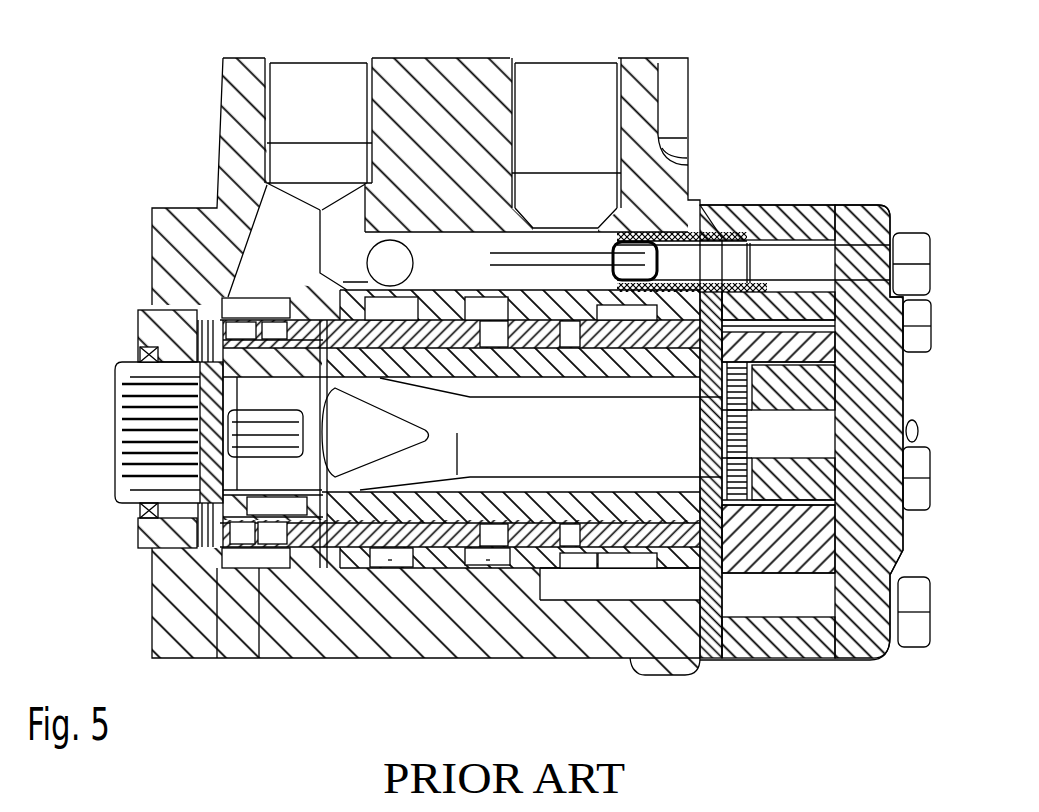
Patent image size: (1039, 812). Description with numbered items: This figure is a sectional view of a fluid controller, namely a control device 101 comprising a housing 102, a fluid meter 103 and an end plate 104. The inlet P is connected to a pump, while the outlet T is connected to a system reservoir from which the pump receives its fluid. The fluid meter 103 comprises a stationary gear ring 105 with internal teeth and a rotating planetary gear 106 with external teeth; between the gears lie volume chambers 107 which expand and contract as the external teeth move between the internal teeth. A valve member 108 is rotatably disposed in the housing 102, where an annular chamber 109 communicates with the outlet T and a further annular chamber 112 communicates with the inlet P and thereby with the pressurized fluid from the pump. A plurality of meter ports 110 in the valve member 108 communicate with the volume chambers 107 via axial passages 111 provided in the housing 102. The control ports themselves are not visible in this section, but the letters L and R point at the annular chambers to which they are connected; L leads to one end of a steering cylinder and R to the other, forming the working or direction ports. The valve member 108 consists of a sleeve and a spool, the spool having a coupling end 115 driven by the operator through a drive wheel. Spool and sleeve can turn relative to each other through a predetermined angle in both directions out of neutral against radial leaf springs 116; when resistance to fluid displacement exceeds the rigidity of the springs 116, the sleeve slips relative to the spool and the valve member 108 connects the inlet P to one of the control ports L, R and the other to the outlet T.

The control device 101 is at (702, 117).
The housing 102 is at (233, 85).
The fluid meter 103 is at (815, 400).
The end plate 104 is at (867, 217).
The stationary gear ring 105 is at (785, 228).
The planetary gear 106 is at (858, 610).
The volume chambers 107 is at (748, 600).
The valve member 108 is at (518, 548).
The annular chamber 109 is at (262, 557).
The meter ports 110 is at (556, 553).
The axial passages 111 is at (648, 582).
The annular chamber 112 is at (637, 566).
The coupling end 115 is at (118, 375).
The radial leaf springs 116 is at (257, 437).
The outlet T is at (300, 82).
The inlet P is at (608, 117).
The control port L is at (390, 560).
The control port R is at (488, 560).